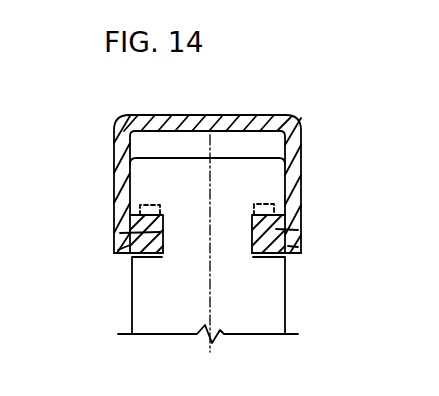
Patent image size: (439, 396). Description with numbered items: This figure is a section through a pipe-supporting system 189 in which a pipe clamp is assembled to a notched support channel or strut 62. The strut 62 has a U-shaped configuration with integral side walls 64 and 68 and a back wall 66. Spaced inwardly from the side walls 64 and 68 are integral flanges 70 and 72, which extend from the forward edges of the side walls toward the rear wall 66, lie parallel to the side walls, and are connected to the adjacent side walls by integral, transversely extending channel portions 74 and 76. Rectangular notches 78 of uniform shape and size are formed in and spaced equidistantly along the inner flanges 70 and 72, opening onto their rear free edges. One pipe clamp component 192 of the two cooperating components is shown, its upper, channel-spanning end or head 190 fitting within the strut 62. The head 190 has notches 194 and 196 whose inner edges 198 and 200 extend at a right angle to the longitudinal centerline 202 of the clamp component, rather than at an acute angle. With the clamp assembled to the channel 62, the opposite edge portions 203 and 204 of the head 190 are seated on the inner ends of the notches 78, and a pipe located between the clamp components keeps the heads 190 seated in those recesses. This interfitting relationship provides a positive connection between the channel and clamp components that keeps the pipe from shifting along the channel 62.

The strut 62 is at (247, 110).
The side wall 64 is at (113, 135).
The back wall 66 is at (188, 116).
The side wall 68 is at (302, 137).
The flange 70 is at (164, 221).
The flange 72 is at (253, 220).
The channel portion 74 is at (122, 253).
The channel portion 76 is at (290, 256).
The notches 78 is at (152, 204).
The pipe-supporting system 189 is at (104, 201).
The channel spanning end 190 is at (251, 311).
The pipe clamp component 192 is at (121, 320).
The notch 194 is at (118, 250).
The notch 196 is at (298, 247).
The inner edge 198 is at (120, 233).
The inner edge 200 is at (298, 230).
The longitudinal centerline 202 is at (210, 283).
The edge portion 203 is at (130, 171).
The edge portion 204 is at (288, 180).